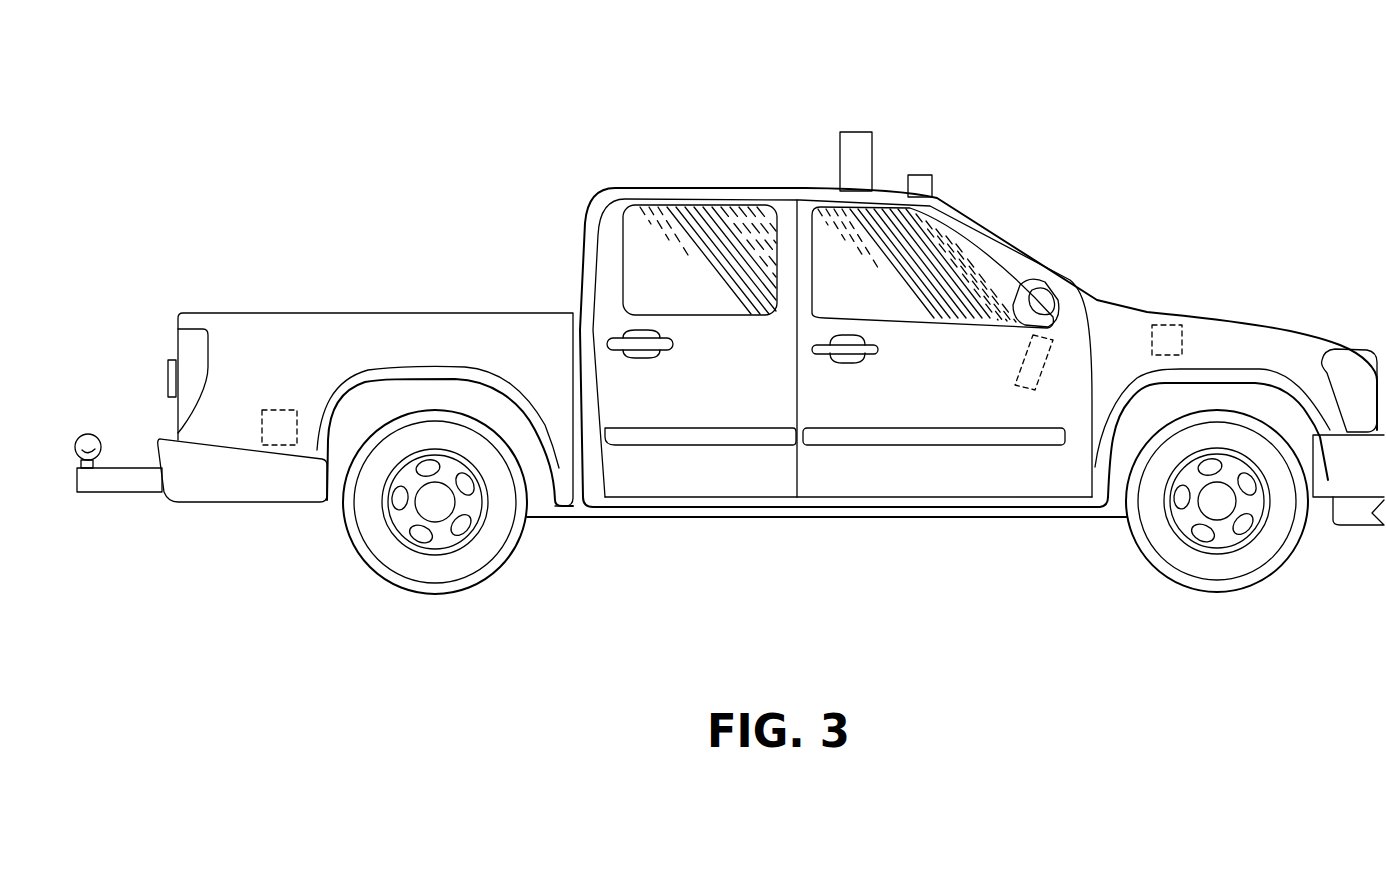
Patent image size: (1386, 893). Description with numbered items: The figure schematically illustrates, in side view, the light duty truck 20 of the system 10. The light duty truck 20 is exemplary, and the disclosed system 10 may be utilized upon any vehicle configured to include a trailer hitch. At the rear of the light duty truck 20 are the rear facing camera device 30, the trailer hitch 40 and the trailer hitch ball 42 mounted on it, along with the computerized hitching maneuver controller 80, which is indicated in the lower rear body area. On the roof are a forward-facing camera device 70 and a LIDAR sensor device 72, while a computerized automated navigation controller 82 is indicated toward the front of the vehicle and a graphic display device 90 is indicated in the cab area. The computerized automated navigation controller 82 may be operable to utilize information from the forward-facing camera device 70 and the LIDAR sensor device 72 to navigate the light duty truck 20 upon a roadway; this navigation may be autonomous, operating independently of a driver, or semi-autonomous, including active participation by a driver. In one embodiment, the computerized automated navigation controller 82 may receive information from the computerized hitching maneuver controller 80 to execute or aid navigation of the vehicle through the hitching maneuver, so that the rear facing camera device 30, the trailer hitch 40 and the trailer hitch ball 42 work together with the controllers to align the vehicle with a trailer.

The system 10 is at (459, 108).
The light duty truck 20 is at (508, 313).
The rear facing camera device 30 is at (167, 367).
The trailer hitch 40 is at (117, 493).
The trailer hitch ball 42 is at (90, 433).
The forward-facing camera device 70 is at (932, 180).
The LIDAR sensor device 72 is at (872, 135).
The computerized hitching maneuver controller 80 is at (272, 447).
The computerized automated navigation controller 82 is at (1182, 330).
The graphic display device 90 is at (1055, 338).